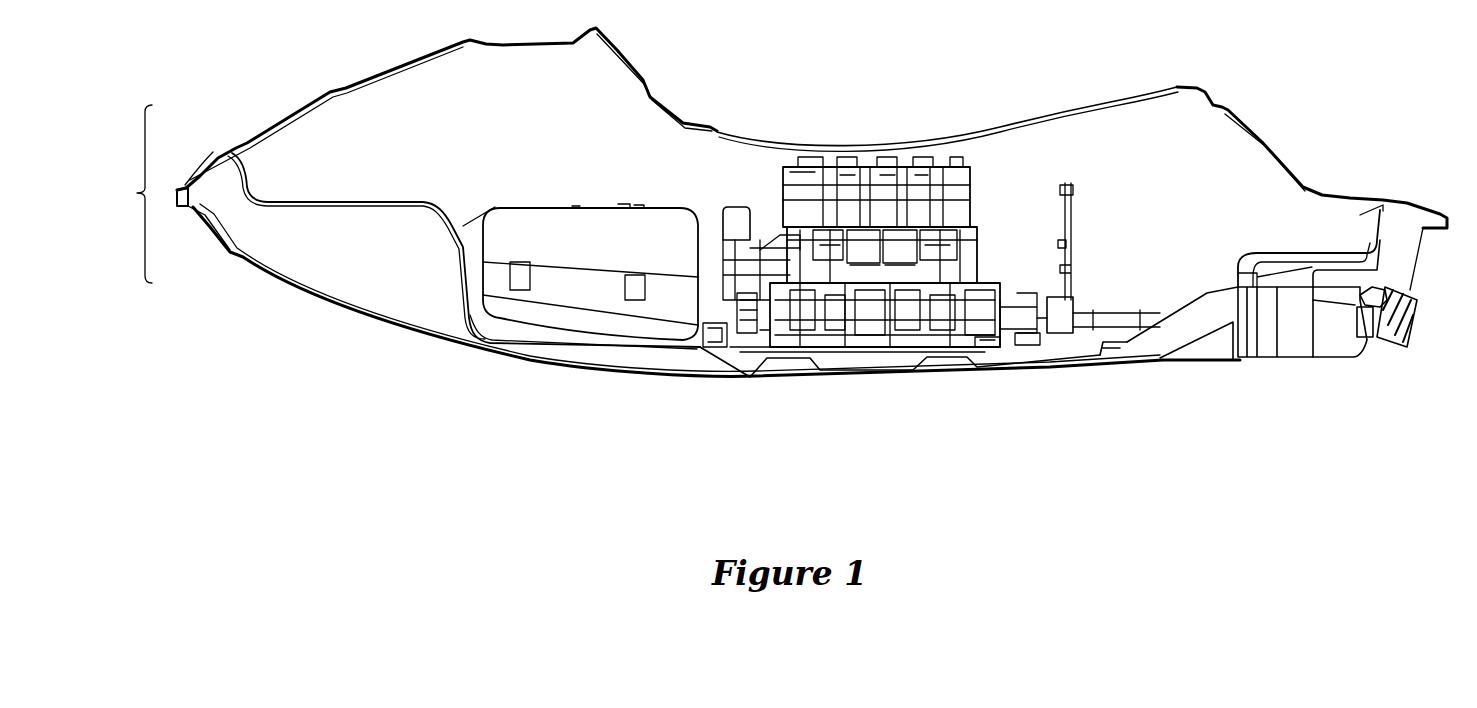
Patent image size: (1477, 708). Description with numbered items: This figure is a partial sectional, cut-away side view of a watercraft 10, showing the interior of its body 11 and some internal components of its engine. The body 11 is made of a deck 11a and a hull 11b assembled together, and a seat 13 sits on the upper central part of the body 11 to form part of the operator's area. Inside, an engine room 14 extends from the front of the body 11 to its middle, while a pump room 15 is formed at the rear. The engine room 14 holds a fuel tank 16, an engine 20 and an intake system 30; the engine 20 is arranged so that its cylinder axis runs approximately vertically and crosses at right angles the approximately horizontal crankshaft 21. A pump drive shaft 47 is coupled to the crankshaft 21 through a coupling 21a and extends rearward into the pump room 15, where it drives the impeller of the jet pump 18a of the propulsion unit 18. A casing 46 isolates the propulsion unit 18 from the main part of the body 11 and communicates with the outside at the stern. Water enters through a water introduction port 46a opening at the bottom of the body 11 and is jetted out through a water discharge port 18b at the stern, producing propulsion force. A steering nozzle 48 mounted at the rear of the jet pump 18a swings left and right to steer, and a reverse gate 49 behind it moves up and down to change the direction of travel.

The watercraft 10 is at (1214, 67).
The body 11 is at (396, 227).
The deck 11a is at (270, 143).
The hull 11b is at (268, 260).
The seat 13 is at (997, 128).
The engine room 14 is at (735, 347).
The pump room 15 is at (1296, 273).
The fuel tank 16 is at (543, 218).
The propulsion unit 18 is at (1316, 420).
The jet pump 18a is at (1283, 340).
The water discharge port 18b is at (1335, 340).
The engine 20 is at (989, 188).
The crankshaft 21 is at (988, 338).
The coupling 21a is at (1027, 337).
The intake system 30 is at (718, 215).
The casing 46 is at (1277, 253).
The water introduction port 46a is at (1117, 350).
The pump drive shaft 47 is at (1097, 304).
The steering nozzle 48 is at (1370, 340).
The reverse gate 49 is at (1417, 327).